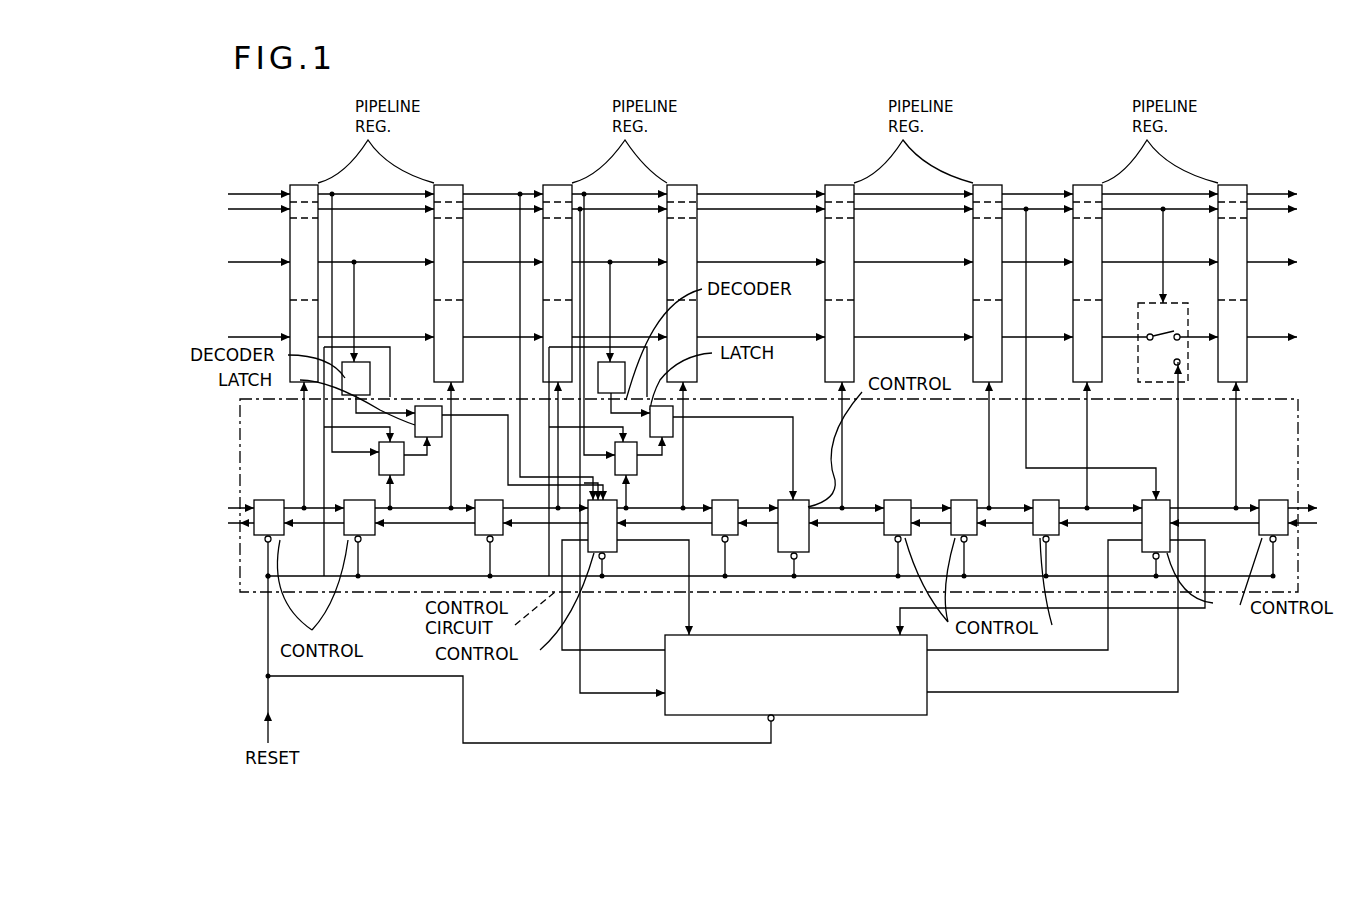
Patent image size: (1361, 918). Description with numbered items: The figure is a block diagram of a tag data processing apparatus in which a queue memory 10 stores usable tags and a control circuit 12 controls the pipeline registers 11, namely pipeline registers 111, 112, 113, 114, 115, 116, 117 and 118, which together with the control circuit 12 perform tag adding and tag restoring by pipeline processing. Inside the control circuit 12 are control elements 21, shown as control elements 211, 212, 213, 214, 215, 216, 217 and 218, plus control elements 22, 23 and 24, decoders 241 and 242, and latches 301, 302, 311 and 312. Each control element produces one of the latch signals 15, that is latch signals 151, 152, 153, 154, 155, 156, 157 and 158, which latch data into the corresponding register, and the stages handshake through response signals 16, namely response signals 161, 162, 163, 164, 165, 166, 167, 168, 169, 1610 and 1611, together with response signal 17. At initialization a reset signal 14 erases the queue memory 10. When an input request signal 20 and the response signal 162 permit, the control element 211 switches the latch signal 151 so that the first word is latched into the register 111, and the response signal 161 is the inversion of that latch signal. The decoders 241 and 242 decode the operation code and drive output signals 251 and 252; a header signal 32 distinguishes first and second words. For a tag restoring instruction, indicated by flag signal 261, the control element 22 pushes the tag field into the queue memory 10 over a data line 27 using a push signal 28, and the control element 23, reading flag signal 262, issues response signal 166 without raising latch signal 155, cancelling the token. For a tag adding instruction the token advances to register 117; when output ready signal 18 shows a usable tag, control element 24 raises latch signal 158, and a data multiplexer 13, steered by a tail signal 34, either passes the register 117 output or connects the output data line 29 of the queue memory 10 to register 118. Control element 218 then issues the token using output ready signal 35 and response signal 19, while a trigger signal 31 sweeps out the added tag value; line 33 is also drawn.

The queue memory 10 is at (927, 708).
The pipeline registers 11 is at (768, 254).
The pipeline register 111 is at (309, 183).
The pipeline register 112 is at (452, 183).
The pipeline register 113 is at (562, 183).
The pipeline register 114 is at (685, 183).
The pipeline register 115 is at (843, 183).
The pipeline register 116 is at (990, 183).
The pipeline register 117 is at (1090, 183).
The pipeline register 118 is at (1232, 183).
The control circuit 12 is at (356, 592).
The data multiplexer 13 is at (1176, 312).
The reset signal 14 is at (270, 728).
The latch signals 15 is at (767, 470).
The latch signal 151 is at (304, 418).
The latch signal 152 is at (451, 530).
The latch signal 153 is at (558, 410).
The latch signal 154 is at (683, 443).
The latch signal 155 is at (842, 428).
The latch signal 156 is at (989, 428).
The latch signal 157 is at (1087, 428).
The latch signal 158 is at (1236, 428).
The response signals 16 is at (731, 578).
The response signal 161 is at (229, 537).
The response signal 162 is at (306, 530).
The response signal 163 is at (412, 527).
The response signal 164 is at (520, 528).
The response signal 165 is at (668, 530).
The response signal 166 is at (745, 528).
The response signal 167 is at (850, 528).
The response signal 168 is at (932, 528).
The response signal 169 is at (1000, 528).
The response signal 1610 is at (1085, 528).
The response signal 1611 is at (1230, 528).
The response signal 17 is at (563, 660).
The output ready signal 18 is at (1108, 628).
The response signal 19 is at (1307, 525).
The input request signal 20 is at (240, 500).
The control elements 21 is at (770, 516).
The control element 211 is at (266, 498).
The control element 212 is at (347, 498).
The control element 213 is at (487, 498).
The control element 214 is at (722, 498).
The control element 215 is at (897, 498).
The control element 216 is at (960, 498).
The control element 217 is at (1040, 498).
The control element 218 is at (1275, 498).
The control element 22 is at (618, 548).
The control element 23 is at (802, 557).
The control element 24 is at (1164, 497).
The decoder 241 is at (370, 338).
The decoder 242 is at (625, 338).
The output signal 251 is at (385, 405).
The output signal 252 is at (662, 404).
The flag signal 261 is at (466, 410).
The flag signal 262 is at (730, 415).
The data line 27 is at (612, 700).
The push signal 28 is at (689, 612).
The output data line 29 is at (1178, 672).
The latch 301 is at (406, 462).
The latch 302 is at (640, 462).
The trigger signal 31 is at (1195, 608).
The latch 311 is at (442, 428).
The latch 312 is at (673, 433).
The header signal 32 is at (520, 302).
The signal line 33 is at (782, 468).
The tail signal 34 is at (1026, 428).
The output ready signal 35 is at (1300, 497).